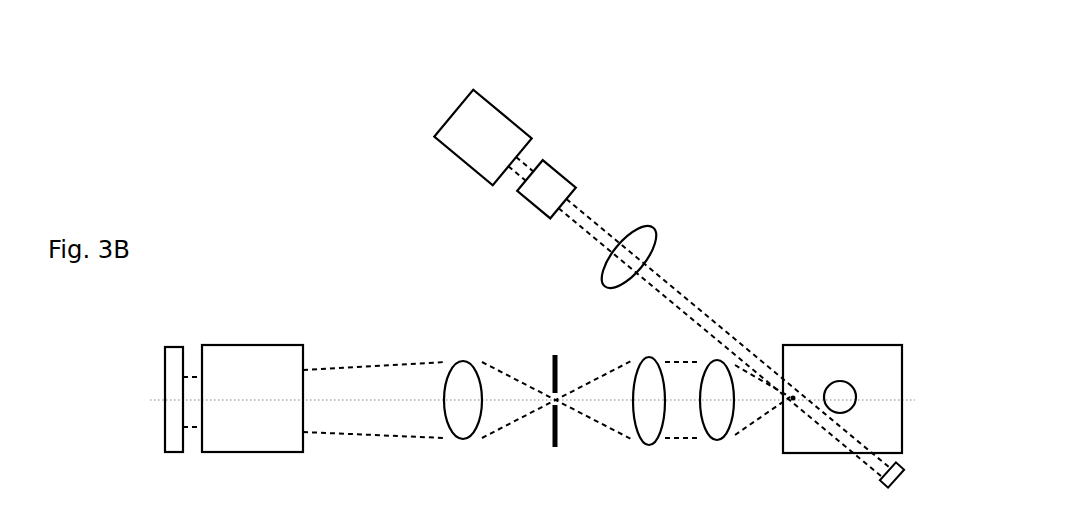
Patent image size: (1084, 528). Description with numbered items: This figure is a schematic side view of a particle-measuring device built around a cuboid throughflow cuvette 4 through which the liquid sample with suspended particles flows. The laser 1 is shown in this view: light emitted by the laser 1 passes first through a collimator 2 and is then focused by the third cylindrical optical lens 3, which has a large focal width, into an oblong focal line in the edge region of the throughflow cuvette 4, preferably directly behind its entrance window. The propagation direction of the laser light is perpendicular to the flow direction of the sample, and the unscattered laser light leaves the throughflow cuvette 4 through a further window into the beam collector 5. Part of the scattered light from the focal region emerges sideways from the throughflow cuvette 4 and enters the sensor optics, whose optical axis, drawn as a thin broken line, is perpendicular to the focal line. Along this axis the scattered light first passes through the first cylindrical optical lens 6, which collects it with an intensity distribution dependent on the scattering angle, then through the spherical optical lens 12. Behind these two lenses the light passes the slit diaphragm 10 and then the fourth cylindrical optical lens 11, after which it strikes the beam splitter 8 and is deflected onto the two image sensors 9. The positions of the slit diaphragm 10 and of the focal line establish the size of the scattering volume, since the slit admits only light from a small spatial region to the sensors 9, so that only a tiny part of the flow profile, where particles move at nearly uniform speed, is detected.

The laser 1 is at (502, 94).
The collimator 2 is at (573, 163).
The third cylindrical optical lens 3 is at (666, 227).
The throughflow cuvette 4 is at (909, 370).
The beam collector 5 is at (906, 481).
The first cylindrical optical lens 6 is at (729, 452).
The beam splitter 8 is at (244, 342).
The light-sensitive sensors 9 is at (172, 458).
The slit diaphragm 10 is at (562, 456).
The fourth cylindrical optical lens 11 is at (453, 452).
The spherical optical lens 12 is at (653, 455).